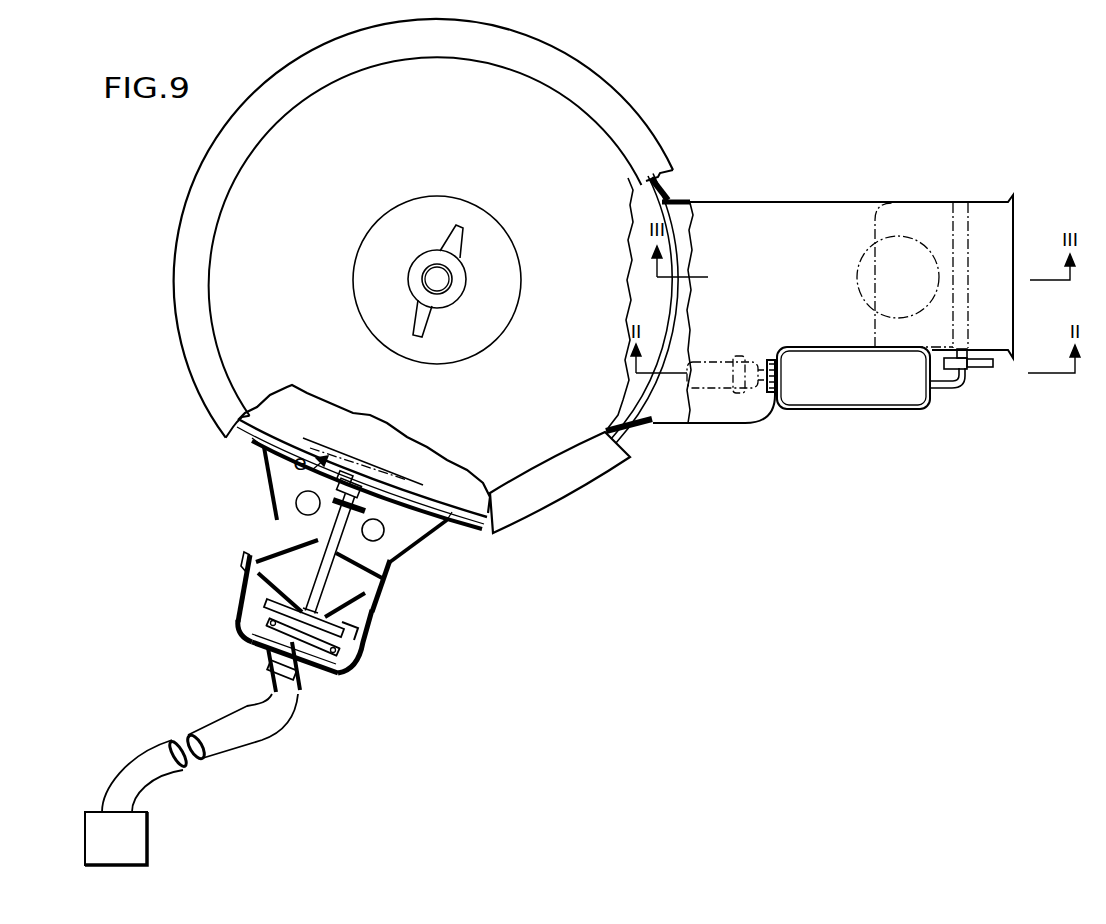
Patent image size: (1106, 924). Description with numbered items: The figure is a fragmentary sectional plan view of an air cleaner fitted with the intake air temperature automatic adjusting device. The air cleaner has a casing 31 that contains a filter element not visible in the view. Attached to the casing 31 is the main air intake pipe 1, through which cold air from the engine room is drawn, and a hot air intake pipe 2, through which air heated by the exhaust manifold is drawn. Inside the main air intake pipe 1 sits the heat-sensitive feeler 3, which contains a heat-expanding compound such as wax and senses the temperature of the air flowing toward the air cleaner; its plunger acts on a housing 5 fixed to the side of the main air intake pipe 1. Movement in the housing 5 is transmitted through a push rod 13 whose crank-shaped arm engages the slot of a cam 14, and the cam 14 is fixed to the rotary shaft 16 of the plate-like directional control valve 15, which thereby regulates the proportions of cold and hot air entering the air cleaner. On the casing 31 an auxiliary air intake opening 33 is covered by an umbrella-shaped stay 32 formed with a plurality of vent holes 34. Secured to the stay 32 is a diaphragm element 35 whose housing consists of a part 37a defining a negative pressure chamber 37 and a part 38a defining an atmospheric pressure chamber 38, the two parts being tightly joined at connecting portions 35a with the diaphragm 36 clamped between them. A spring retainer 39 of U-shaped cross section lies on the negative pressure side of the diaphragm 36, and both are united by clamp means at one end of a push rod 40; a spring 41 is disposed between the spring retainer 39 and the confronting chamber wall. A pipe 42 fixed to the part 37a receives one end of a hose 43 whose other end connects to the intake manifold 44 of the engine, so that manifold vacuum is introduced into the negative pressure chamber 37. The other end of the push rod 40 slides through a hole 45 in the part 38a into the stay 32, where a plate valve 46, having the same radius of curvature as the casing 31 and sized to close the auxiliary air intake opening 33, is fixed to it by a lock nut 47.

The main air intake pipe 1 is at (781, 201).
The hot air intake pipe 2 is at (856, 282).
The heat-sensitive element or feeler 3 is at (712, 362).
The housing 5 is at (855, 410).
The push rod 13 is at (937, 390).
The cam 14 is at (991, 368).
The directional control valve 15 is at (921, 207).
The rotary shaft 16 is at (966, 370).
The casing 31 is at (237, 437).
The umbrella-shaped stay 32 is at (455, 524).
The auxiliary air intake opening 33 is at (392, 556).
The vent holes 34 is at (266, 472).
The diaphragm element 35 is at (362, 655).
The connecting portions 35a is at (248, 575).
The diaphragm 36 is at (366, 626).
The negative pressure chamber 37 is at (342, 674).
The housing part defining the negative pressure chamber 37a is at (266, 670).
The atmospheric pressure chamber 38 is at (266, 555).
The housing part defining the atmospheric pressure chamber 38a is at (275, 532).
The spring retainer 39 is at (250, 608).
The push rod 40 is at (318, 600).
The spring 41 is at (258, 622).
The pipe 42 is at (302, 680).
The hose 43 is at (258, 740).
The intake manifold 44 is at (147, 835).
The hole 45 is at (331, 612).
The plate valve 46 is at (432, 518).
The lock nut 47 is at (372, 492).